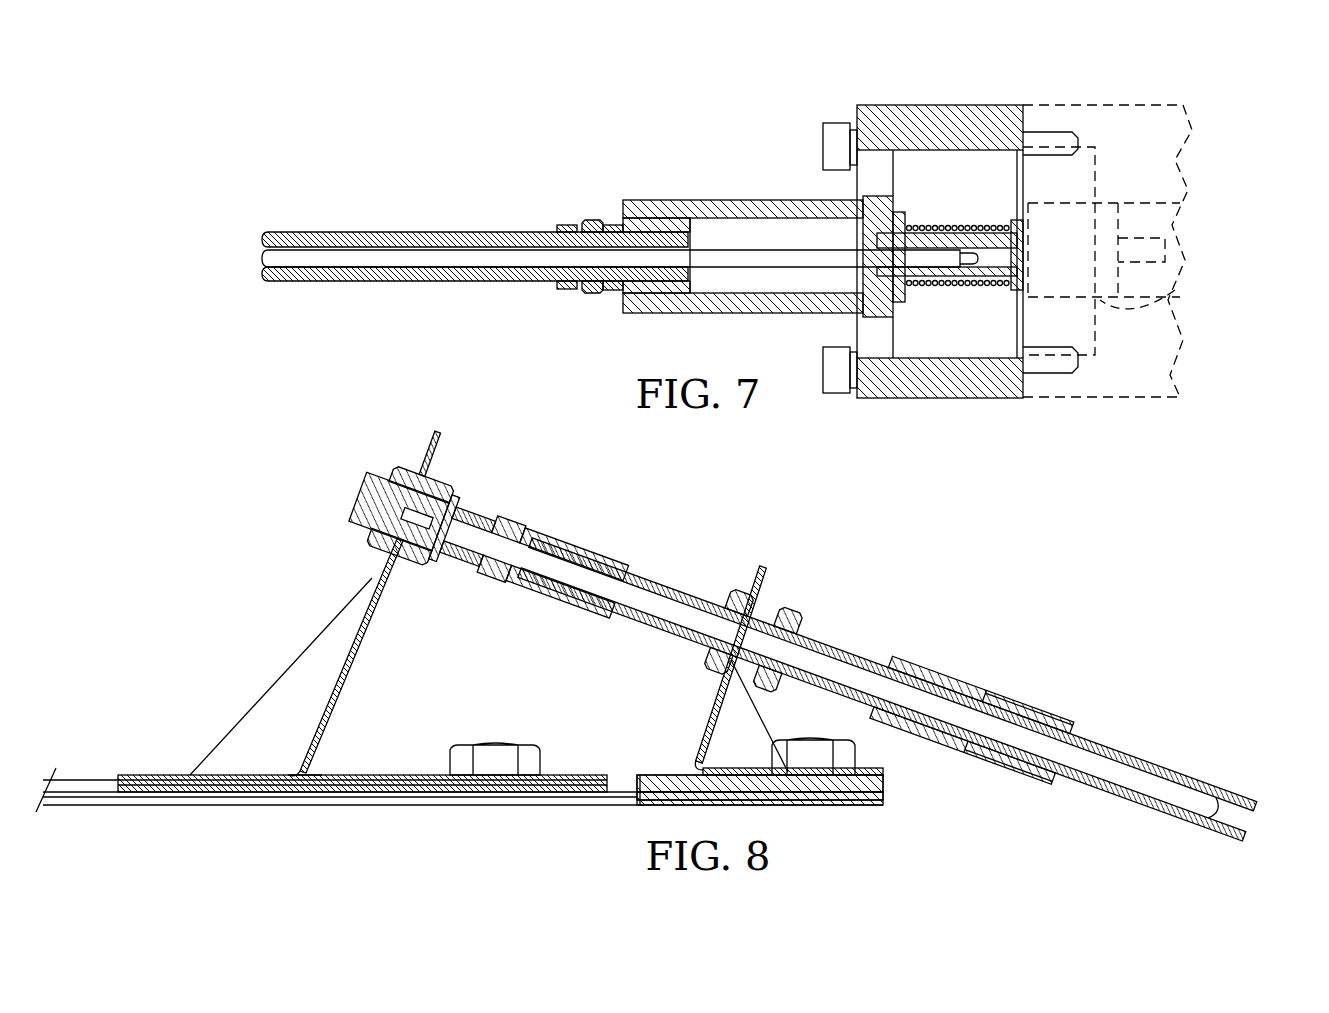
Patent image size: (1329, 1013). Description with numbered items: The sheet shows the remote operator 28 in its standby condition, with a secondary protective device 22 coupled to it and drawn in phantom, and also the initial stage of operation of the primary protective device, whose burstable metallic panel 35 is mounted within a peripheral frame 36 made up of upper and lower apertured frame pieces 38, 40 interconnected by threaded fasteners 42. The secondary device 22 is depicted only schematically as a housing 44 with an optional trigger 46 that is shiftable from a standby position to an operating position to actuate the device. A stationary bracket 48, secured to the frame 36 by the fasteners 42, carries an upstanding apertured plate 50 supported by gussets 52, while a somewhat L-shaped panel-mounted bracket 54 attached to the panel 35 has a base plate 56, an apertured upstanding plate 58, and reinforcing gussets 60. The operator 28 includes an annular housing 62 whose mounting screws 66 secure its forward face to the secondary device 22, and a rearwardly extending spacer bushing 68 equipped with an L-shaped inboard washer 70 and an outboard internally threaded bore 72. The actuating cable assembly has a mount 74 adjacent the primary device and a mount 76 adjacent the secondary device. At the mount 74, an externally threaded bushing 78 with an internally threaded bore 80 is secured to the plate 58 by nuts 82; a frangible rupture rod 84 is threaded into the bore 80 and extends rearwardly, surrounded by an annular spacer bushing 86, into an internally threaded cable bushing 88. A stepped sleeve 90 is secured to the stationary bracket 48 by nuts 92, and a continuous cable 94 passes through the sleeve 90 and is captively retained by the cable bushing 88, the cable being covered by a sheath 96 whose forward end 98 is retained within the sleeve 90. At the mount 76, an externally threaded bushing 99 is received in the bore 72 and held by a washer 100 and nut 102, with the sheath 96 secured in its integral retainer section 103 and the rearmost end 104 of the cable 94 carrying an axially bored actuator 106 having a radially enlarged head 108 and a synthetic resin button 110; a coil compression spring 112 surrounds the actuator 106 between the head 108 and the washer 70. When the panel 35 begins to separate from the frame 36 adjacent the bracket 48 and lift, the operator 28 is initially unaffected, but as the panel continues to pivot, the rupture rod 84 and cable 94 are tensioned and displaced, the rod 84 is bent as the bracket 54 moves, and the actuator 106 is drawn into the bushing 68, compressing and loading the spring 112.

In FIG. 7, the secondary protective device 22 is at (1216, 87).
In FIG. 7, the operator 28 is at (806, 87).
In FIG. 8, the burstable metallic panel 35 is at (97, 778).
In FIG. 8, the peripheral frame 36 is at (637, 778).
In FIG. 8, the upper frame piece 38 is at (882, 800).
In FIG. 8, the lower frame piece 40 is at (865, 806).
In FIG. 8, the threaded fasteners 42 is at (497, 750).
In FIG. 7, the housing 44 is at (1128, 125).
In FIG. 7, the trigger 46 is at (1175, 290).
In FIG. 8, the stationary bracket 48 is at (883, 785).
In FIG. 8, the upstanding apertured plate 50 is at (712, 718).
In FIG. 8, the gussets 52 is at (718, 748).
In FIG. 8, the panel-mounted bracket 54 is at (445, 437).
In FIG. 8, the base plate 56 is at (160, 775).
In FIG. 8, the apertured upstanding plate 58 is at (350, 675).
In FIG. 8, the reinforcing gussets 60 is at (283, 695).
In FIG. 7, the annular housing 62 is at (928, 105).
In FIG. 7, the mounting screws 66 is at (825, 368).
In FIG. 7, the spacer bushing 68 is at (708, 203).
In FIG. 7, the inboard washer 70 is at (905, 300).
In FIG. 7, the internally threaded bore 72 is at (650, 208).
In FIG. 8, the mount 74 is at (889, 581).
In FIG. 7, the mount 76 is at (590, 216).
In FIG. 8, the externally threaded bushing 78 is at (456, 498).
In FIG. 8, the internally threaded bore 80 is at (441, 510).
In FIG. 8, the nuts 82 is at (372, 580).
In FIG. 8, the frangible rupture rod 84 is at (540, 532).
In FIG. 8, the annular spacer bushing 86 is at (498, 527).
In FIG. 8, the cable bushing 88 is at (570, 550).
In FIG. 8, the stepped sleeve 90 is at (955, 660).
In FIG. 8, the nuts 92 is at (780, 605).
In FIG. 7, the cable 94 is at (527, 266).
In FIG. 8, the cable 94 is at (847, 673).
In FIG. 7, the sheath 96 is at (497, 283).
In FIG. 8, the sheath 96 is at (1100, 745).
In FIG. 8, the forward end of sheath 98 is at (1023, 733).
In FIG. 7, the externally threaded bushing 99 is at (610, 224).
In FIG. 7, the washer 100 is at (612, 292).
In FIG. 7, the nut 102 is at (590, 295).
In FIG. 7, the retainer section 103 is at (567, 225).
In FIG. 7, the rearmost end of cable 104 is at (768, 250).
In FIG. 7, the actuator 106 is at (990, 226).
In FIG. 7, the radially enlarged head 108 is at (1022, 290).
In FIG. 7, the button 110 is at (1022, 244).
In FIG. 7, the coil compression spring 112 is at (985, 288).